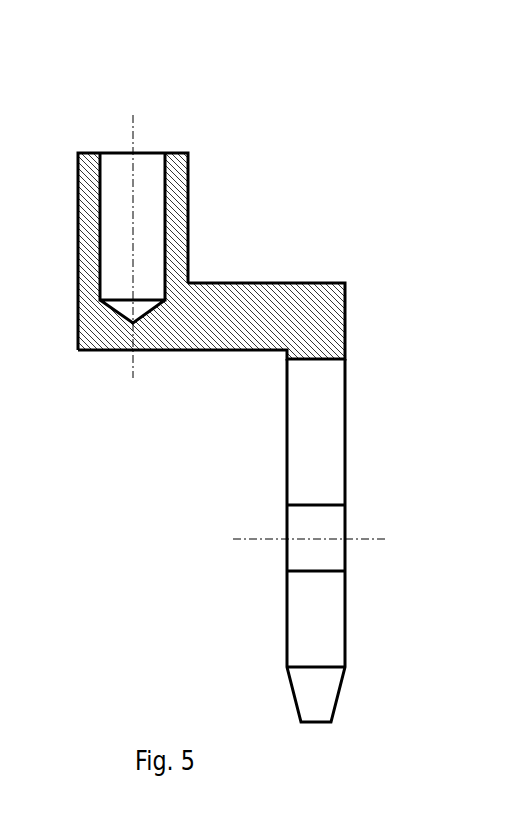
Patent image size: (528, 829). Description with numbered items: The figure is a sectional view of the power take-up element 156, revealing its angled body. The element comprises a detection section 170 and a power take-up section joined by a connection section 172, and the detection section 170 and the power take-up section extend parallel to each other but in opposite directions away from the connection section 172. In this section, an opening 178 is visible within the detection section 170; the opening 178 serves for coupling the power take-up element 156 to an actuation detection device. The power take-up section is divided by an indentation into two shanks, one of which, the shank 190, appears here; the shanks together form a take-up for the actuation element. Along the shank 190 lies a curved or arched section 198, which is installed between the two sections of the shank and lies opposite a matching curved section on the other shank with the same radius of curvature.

The power take-up element 156 is at (298, 370).
The detection section 170 is at (221, 253).
The connection section 172 is at (227, 345).
The opening 178 is at (148, 177).
The shank 190 is at (341, 540).
The curved section 198 is at (302, 522).